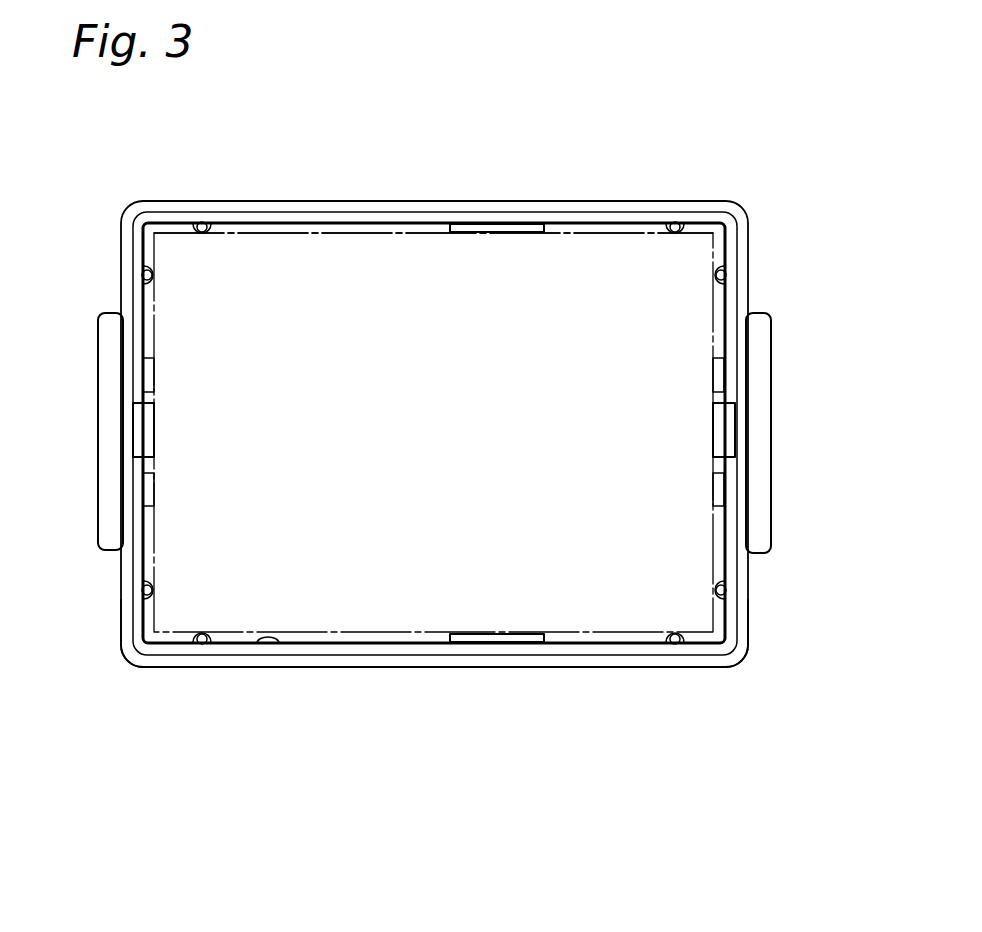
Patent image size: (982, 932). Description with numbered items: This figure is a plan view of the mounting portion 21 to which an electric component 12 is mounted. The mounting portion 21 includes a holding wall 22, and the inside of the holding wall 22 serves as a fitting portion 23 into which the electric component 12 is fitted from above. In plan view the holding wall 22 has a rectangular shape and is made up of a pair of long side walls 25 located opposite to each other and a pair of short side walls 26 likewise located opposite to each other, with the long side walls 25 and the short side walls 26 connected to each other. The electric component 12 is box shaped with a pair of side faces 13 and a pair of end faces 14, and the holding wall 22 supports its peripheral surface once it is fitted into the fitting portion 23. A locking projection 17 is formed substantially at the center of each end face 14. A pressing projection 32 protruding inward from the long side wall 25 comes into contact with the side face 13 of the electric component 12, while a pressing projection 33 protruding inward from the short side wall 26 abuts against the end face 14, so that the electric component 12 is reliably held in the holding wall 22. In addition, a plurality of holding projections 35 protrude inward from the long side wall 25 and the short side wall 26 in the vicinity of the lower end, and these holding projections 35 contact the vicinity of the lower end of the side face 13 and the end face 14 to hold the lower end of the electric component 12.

The electric component 12 is at (325, 228).
The side face 13 is at (365, 233).
The end face 14 is at (150, 322).
The locking projection 17 is at (133, 437).
The mounting portion 21 is at (584, 158).
The holding wall 22 is at (623, 190).
The fitting portion 23 is at (268, 643).
The long side wall 25 is at (427, 202).
The short side wall 26 is at (128, 587).
The pressing projection 32 is at (470, 234).
The pressing projection 33 is at (150, 375).
The holding projection 35 is at (205, 236).